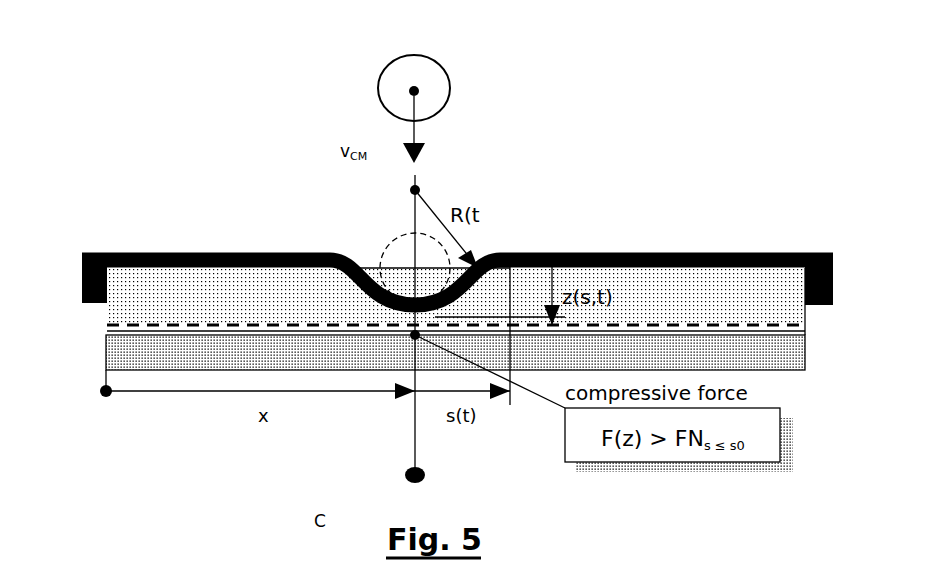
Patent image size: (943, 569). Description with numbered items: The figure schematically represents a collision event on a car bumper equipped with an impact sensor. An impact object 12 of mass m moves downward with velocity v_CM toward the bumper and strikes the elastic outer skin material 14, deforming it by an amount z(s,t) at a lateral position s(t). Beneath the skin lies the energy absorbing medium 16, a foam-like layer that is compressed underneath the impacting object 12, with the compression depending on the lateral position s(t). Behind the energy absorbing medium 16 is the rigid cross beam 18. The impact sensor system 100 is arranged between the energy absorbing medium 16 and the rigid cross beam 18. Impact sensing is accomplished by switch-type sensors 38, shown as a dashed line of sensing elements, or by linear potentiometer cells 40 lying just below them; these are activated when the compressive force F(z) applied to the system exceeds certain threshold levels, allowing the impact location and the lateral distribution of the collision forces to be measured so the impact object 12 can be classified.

The impact object 12 is at (448, 92).
The elastic outer skin material 14 is at (122, 253).
The energy absorbing medium 16 is at (112, 298).
The rigid cross beam 18 is at (150, 358).
The switch-type sensors 38 is at (812, 325).
The linear potentiometer cells 40 is at (812, 338).
The impact sensor system 100 is at (240, 350).